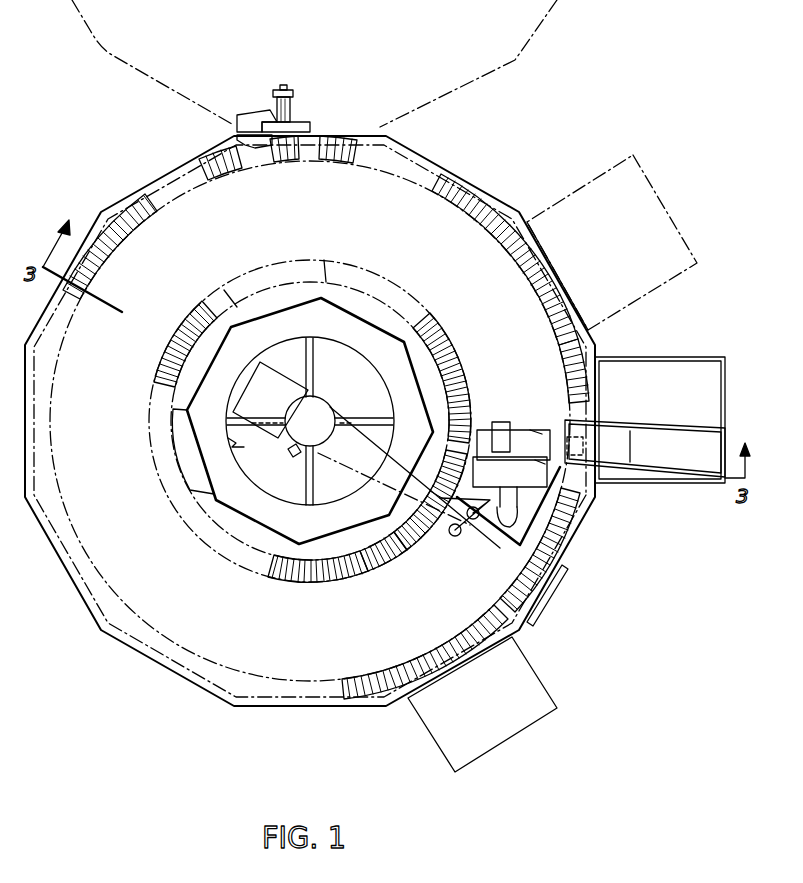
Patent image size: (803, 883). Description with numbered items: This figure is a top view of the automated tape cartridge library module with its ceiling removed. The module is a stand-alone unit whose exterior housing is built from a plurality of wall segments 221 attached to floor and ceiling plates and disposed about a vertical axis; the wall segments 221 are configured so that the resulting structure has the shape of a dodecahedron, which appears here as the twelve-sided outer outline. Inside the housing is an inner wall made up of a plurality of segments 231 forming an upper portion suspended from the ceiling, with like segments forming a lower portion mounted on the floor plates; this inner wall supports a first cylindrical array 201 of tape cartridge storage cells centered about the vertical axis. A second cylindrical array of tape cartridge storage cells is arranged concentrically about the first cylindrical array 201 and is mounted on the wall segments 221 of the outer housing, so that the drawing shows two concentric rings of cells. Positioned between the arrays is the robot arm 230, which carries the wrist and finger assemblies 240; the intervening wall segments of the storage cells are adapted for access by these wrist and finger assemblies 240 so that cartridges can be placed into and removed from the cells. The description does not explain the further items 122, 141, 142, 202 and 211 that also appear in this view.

The container loading station 122 is at (497, 719).
The conveyor station 141 is at (672, 402).
The feed station 142 is at (621, 257).
The first cylindrical array 201 is at (369, 586).
The outer ring of tool holder segments 202 is at (88, 322).
The conveyor slide 211 is at (686, 462).
The wall segments 221 is at (186, 686).
The robot arm 230 is at (285, 407).
The inner wall segments 231 is at (238, 440).
The wrist and finger assemblies 240 is at (514, 412).